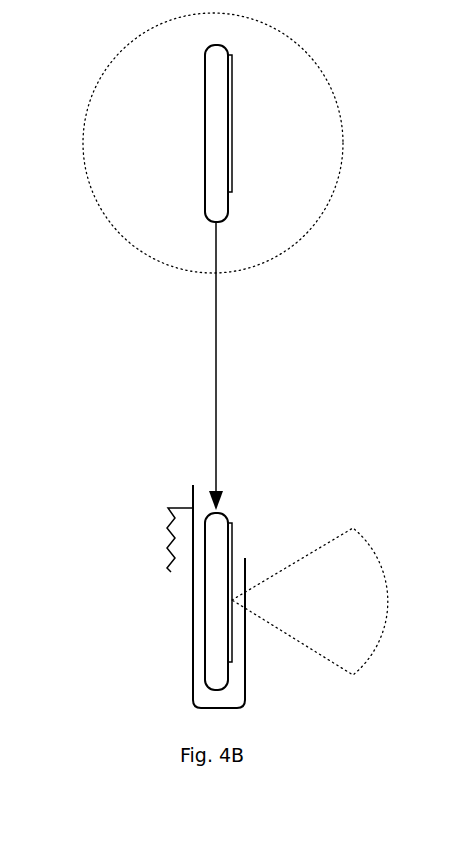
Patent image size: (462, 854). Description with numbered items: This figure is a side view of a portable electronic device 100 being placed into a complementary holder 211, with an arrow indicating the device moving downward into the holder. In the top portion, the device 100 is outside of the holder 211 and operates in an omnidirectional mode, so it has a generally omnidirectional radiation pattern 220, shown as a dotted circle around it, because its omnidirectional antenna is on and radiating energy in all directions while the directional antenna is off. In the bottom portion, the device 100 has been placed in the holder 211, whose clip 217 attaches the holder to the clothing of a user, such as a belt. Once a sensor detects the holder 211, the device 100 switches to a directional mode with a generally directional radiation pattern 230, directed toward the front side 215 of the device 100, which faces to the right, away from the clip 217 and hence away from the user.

The device 100 is at (205, 103).
The front side 215 is at (254, 141).
The holder 211 is at (193, 680).
The clip 217 is at (170, 533).
The omnidirectional radiation pattern 220 is at (327, 79).
The directional radiation pattern 230 is at (365, 535).